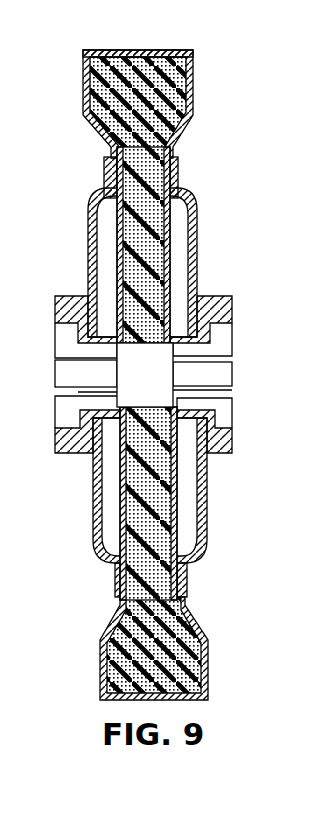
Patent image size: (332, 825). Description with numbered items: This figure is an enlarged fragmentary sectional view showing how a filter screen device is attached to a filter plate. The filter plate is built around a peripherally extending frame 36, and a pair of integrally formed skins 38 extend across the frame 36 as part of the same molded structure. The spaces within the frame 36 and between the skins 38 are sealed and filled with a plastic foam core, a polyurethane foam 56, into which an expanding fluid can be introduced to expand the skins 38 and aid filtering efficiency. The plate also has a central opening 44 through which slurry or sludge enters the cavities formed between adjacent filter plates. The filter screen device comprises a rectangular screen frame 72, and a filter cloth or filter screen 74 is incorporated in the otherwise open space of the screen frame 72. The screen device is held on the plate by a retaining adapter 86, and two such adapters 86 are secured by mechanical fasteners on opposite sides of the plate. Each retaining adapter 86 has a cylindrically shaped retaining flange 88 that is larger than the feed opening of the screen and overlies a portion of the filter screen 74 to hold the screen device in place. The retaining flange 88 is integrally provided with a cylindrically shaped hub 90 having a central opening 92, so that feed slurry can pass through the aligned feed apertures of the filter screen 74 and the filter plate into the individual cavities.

The frame 36 is at (83, 103).
The skins 38 is at (167, 266).
The central opening 44 is at (156, 385).
The polyurethane foam 56 is at (175, 50).
The screen frame 72 is at (104, 171).
The filter screen 74 is at (90, 268).
The retaining adapter 86 is at (242, 368).
The retaining flange 88 is at (202, 457).
The hub 90 is at (93, 396).
The central opening 92 is at (80, 358).